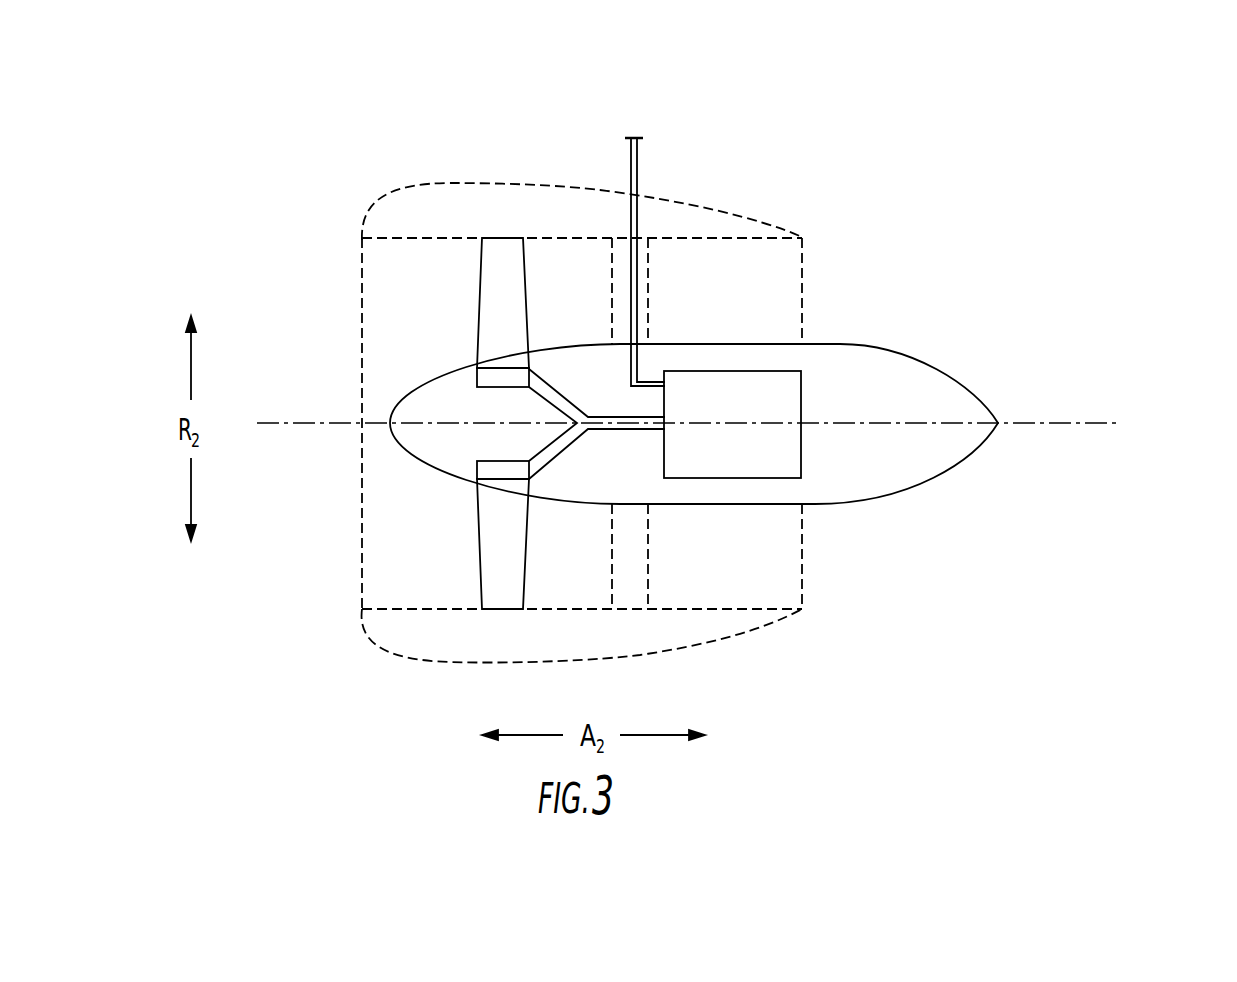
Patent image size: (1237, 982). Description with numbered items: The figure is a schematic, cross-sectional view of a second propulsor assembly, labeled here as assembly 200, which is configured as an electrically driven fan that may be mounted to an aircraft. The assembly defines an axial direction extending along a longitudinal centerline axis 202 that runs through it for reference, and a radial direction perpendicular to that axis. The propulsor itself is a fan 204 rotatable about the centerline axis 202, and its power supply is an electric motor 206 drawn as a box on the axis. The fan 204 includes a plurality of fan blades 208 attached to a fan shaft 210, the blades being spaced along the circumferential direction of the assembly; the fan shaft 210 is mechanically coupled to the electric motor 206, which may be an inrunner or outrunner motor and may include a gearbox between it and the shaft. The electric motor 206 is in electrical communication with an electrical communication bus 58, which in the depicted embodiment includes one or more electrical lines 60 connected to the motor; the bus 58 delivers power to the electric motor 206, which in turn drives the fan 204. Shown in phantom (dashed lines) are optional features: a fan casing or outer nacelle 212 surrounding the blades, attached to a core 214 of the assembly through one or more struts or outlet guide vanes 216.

The propulsion engine 200 is at (393, 108).
The longitudinal centerline axis 202 is at (1055, 423).
The fan 204 is at (428, 298).
The electric motor 206 is at (785, 368).
The fan blades 208 is at (480, 329).
The fan shaft 210 is at (610, 432).
The outer nacelle 212 is at (670, 190).
The core 214 is at (890, 355).
The outlet guide vanes 216 is at (648, 570).
The electrical communication bus 58 is at (603, 157).
The electrical lines 60 is at (637, 272).